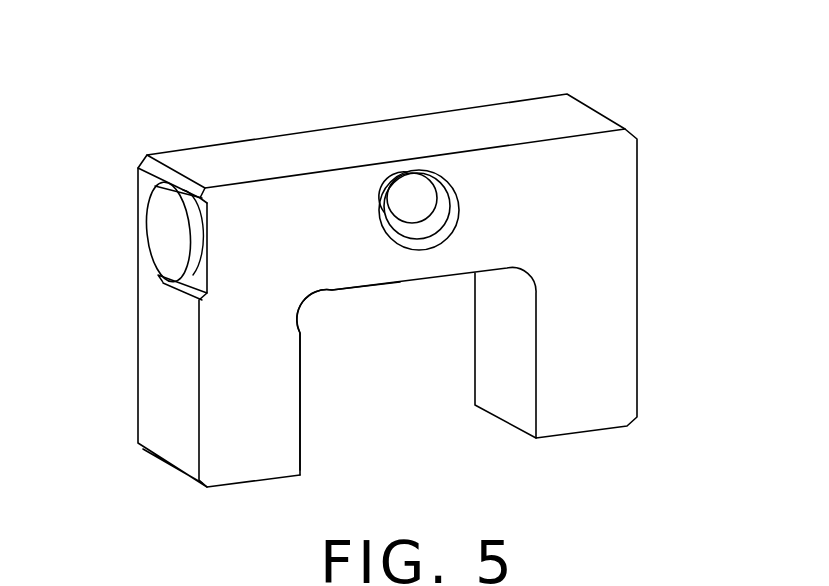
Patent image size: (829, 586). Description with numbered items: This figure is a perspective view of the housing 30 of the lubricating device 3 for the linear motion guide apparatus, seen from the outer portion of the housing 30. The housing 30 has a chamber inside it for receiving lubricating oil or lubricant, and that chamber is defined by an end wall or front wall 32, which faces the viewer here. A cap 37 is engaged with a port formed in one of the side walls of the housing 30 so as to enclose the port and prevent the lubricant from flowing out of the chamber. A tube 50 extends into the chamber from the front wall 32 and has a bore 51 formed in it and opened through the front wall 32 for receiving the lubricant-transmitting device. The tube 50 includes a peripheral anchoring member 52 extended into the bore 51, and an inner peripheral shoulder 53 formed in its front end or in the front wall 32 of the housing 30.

The lubricating device 3 is at (635, 72).
The housing 30 is at (617, 353).
The front wall 32 is at (282, 408).
The cap 37 is at (162, 228).
The tube 50 is at (455, 192).
The bore 51 is at (422, 212).
The anchoring member 52 is at (458, 192).
The inner peripheral shoulder 53 is at (428, 242).